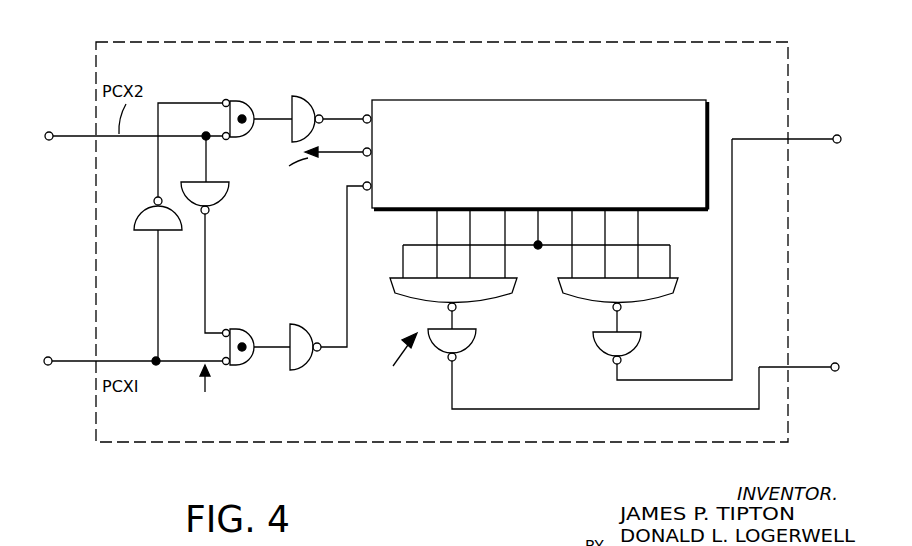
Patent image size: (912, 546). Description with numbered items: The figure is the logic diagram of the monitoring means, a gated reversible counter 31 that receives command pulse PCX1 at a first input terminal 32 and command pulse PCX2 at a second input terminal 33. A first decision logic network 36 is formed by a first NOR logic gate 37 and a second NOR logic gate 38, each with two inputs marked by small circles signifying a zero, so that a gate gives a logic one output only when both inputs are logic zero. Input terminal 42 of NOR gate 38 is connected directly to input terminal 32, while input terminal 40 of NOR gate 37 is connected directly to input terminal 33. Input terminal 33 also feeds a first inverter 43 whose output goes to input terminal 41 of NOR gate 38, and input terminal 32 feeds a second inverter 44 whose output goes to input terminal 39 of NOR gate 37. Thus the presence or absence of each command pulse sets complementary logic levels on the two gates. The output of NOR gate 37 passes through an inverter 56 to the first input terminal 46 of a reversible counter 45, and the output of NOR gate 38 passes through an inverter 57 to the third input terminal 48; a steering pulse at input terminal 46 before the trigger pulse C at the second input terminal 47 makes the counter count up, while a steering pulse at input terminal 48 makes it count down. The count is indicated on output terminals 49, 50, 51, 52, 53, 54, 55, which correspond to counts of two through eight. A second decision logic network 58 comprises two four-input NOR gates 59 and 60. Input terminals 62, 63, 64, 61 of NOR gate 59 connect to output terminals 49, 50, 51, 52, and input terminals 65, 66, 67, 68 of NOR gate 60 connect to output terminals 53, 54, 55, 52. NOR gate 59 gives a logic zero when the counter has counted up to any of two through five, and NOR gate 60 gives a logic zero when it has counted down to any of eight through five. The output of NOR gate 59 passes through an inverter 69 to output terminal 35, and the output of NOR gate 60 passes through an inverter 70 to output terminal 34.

The gated reversible counter 31 is at (577, 43).
The first input terminal 32 is at (55, 347).
The second input terminal 33 is at (56, 122).
The output terminal 34 is at (836, 135).
The output terminal 35 is at (834, 363).
The first decision logic network 36 is at (201, 389).
The first NOR logic gate 37 is at (245, 100).
The second NOR logic gate 38 is at (250, 330).
The input terminal of NOR gate 37 39 is at (218, 92).
The input terminal of NOR gate 37 40 is at (216, 132).
The input terminal of NOR gate 38 41 is at (212, 331).
The input terminal of NOR gate 38 42 is at (218, 356).
The first inverter 43 is at (222, 202).
The second inverter 44 is at (140, 233).
The reversible counter 45 is at (455, 100).
The first input terminal 46 is at (350, 106).
The second input terminal 47 is at (335, 158).
The third input terminal 48 is at (350, 190).
The output terminal 49 is at (436, 212).
The output terminal 50 is at (469, 212).
The output terminal 51 is at (504, 212).
The output terminal 52 is at (536, 212).
The output terminal 53 is at (572, 212).
The output terminal 54 is at (604, 212).
The output terminal 55 is at (637, 212).
The inverter 56 is at (308, 95).
The inverter 57 is at (300, 323).
The second decision logic network 58 is at (398, 362).
The first NOR gate 59 is at (398, 304).
The second NOR gate 60 is at (673, 298).
The input terminal of NOR gate 59 61 is at (404, 275).
The input terminal of NOR gate 59 62 is at (438, 276).
The input terminal of NOR gate 59 63 is at (473, 276).
The input terminal of NOR gate 59 64 is at (507, 276).
The input terminal of NOR gate 60 65 is at (570, 276).
The input terminal of NOR gate 60 66 is at (603, 276).
The input terminal of NOR gate 60 67 is at (636, 276).
The input terminal of NOR gate 60 68 is at (668, 276).
The inverter 69 is at (466, 349).
The inverter 70 is at (600, 350).